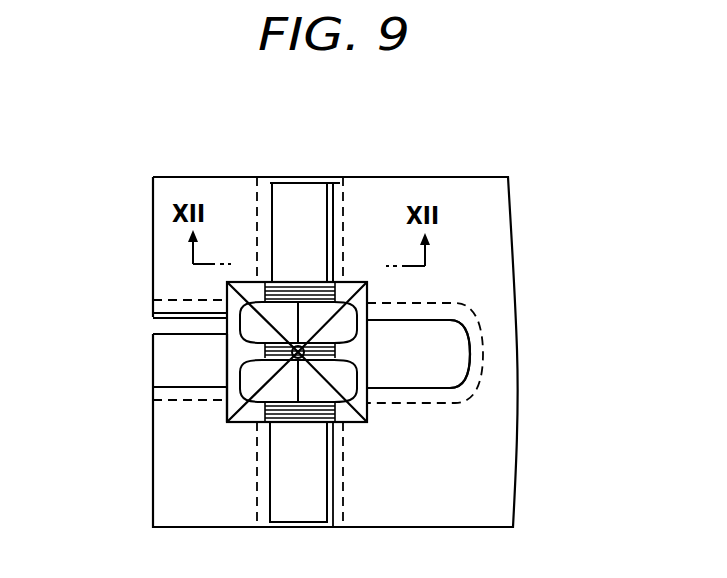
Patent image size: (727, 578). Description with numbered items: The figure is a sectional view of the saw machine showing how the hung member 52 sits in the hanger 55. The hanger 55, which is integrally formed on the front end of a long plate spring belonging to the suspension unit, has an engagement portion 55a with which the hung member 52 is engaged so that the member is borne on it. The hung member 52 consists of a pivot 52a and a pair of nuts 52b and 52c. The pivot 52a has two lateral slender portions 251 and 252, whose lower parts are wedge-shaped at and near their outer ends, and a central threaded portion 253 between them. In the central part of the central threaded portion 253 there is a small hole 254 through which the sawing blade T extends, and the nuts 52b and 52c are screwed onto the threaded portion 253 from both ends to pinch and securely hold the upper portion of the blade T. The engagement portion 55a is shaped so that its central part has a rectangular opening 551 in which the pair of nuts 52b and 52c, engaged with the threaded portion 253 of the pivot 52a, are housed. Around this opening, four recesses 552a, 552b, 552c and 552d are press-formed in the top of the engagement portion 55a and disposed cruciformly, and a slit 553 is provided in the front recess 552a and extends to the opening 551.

The hanger 55 is at (524, 496).
The engagement portion 55a is at (160, 246).
The hung member 52 is at (277, 174).
The pivot 52a is at (299, 183).
The nut 52b is at (252, 314).
The nut 52c is at (250, 372).
The lateral slender portion 251 is at (330, 194).
The lateral slender portion 252 is at (280, 483).
The central threaded portion 253 is at (368, 285).
The small hole 254 is at (370, 338).
The opening 551 is at (227, 406).
The front recess 552a is at (170, 376).
The recess 552b is at (333, 477).
The recess 552c is at (452, 367).
The recess 552d is at (343, 213).
The slit 553 is at (158, 326).
The sawing blade T is at (303, 357).